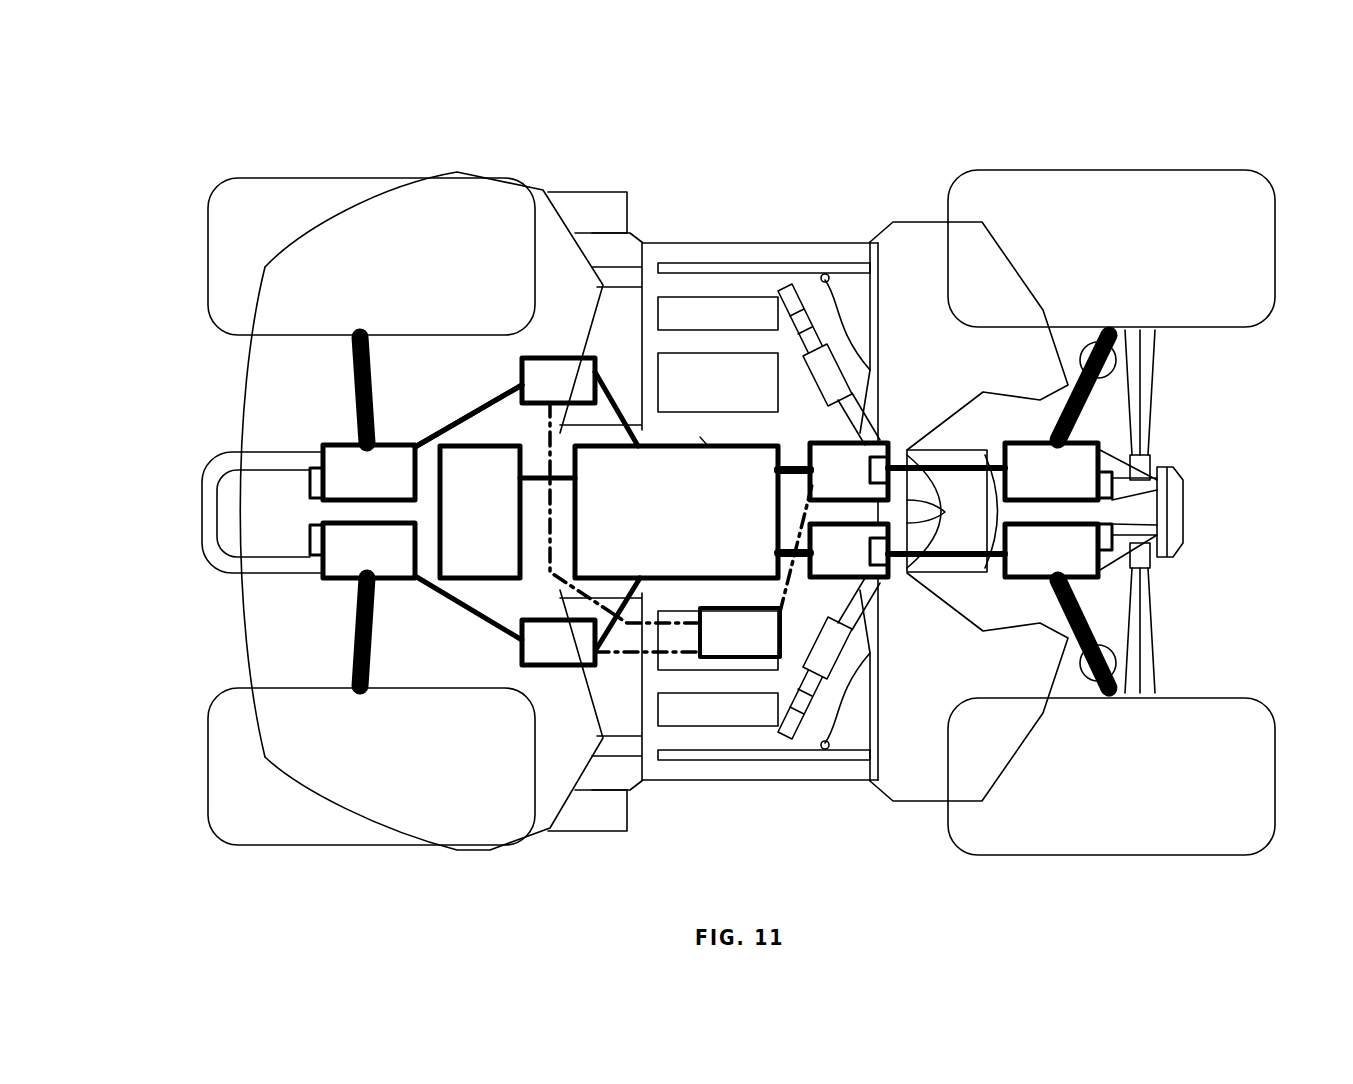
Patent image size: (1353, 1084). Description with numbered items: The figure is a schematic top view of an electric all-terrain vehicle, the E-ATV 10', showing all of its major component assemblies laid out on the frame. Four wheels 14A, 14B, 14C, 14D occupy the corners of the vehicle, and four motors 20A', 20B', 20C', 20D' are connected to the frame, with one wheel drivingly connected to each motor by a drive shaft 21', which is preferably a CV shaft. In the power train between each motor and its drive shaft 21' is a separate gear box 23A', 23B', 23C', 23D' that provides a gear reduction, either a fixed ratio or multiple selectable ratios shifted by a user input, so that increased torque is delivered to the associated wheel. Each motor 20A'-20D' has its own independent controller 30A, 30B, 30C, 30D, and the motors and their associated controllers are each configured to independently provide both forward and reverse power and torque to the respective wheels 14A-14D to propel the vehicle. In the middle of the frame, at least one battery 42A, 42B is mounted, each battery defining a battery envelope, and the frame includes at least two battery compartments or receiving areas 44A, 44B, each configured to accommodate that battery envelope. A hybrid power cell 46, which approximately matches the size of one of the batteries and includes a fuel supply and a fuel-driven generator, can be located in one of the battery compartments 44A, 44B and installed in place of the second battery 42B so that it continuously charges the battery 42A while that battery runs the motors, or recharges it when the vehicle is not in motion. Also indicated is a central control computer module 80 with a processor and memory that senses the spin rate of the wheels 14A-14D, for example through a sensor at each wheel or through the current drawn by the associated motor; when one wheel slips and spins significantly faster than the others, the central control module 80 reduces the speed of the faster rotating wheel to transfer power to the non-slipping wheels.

The E-ATV 10' is at (1046, 85).
The wheel 14A is at (1143, 845).
The wheel 14B is at (265, 830).
The wheel 14C is at (1157, 192).
The wheel 14D is at (268, 192).
The motor 20A' is at (1165, 560).
The motor 20B' is at (271, 583).
The motor 20C' is at (1158, 463).
The motor 20D' is at (274, 439).
The drive shaft 21' is at (692, 503).
The gear box 23A' is at (1191, 535).
The gear box 23B' is at (204, 552).
The gear box 23C' is at (1197, 485).
The gear box 23D' is at (204, 463).
The controller 30A is at (887, 582).
The controller 30B is at (558, 662).
The controller 30C is at (863, 443).
The controller 30D is at (556, 375).
The battery 42A is at (663, 477).
The battery 42B is at (469, 338).
The battery compartment 44A is at (708, 437).
The battery compartment 44B is at (455, 428).
The hybrid power cell 46 is at (487, 468).
The central control computer module 80 is at (681, 530).